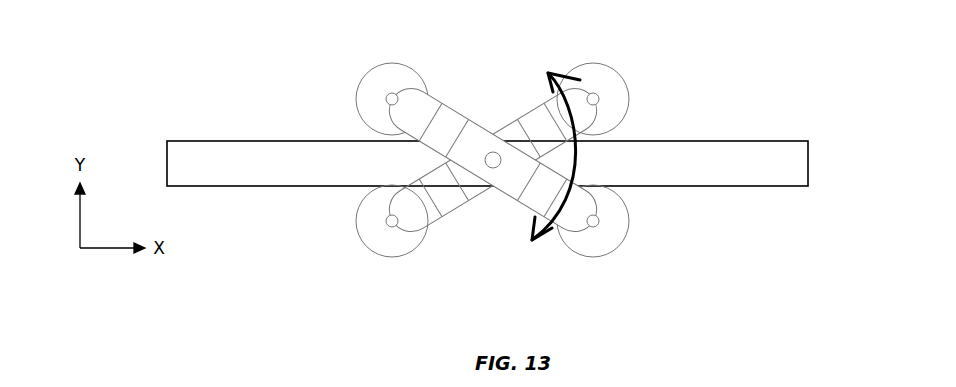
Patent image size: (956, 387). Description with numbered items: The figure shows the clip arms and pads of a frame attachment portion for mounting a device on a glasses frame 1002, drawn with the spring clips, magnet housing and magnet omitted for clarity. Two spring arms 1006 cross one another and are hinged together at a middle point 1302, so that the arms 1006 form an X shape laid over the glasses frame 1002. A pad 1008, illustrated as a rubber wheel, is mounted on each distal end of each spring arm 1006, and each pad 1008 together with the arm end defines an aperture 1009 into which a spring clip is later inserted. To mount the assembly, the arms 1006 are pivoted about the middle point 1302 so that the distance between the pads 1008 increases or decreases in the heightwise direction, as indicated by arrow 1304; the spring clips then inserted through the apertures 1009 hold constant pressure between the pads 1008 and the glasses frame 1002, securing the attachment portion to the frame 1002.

The glasses frame 1002 is at (788, 177).
The spring arm 1006 is at (430, 102).
The pad 1008 is at (382, 75).
The aperture 1009 is at (388, 99).
The middle point 1302 is at (494, 151).
The arrow 1304 is at (571, 164).